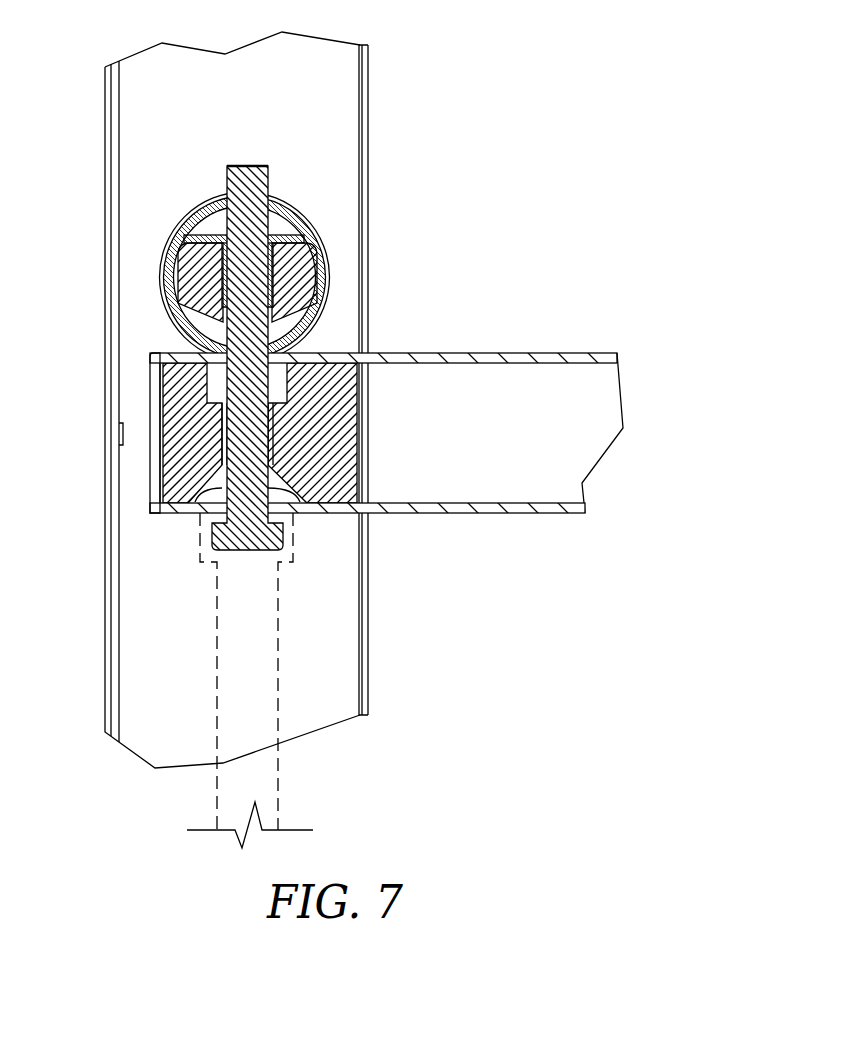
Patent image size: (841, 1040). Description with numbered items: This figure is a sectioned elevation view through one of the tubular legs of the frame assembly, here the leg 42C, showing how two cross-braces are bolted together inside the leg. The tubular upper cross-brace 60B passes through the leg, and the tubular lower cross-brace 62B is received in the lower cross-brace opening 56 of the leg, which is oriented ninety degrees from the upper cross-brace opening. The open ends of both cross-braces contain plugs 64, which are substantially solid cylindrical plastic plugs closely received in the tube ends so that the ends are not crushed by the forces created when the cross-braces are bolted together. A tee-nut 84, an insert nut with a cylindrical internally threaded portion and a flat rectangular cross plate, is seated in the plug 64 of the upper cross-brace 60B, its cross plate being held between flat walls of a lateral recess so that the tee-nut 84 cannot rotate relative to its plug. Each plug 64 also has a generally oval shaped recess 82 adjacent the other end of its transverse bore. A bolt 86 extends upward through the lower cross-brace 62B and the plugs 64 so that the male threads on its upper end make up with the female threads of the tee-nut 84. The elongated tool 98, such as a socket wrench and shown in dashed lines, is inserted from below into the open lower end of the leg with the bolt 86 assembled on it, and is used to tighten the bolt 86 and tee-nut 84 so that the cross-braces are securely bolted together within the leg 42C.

The leg 42C is at (370, 90).
The tee-nut 84 is at (286, 238).
The plug 64 is at (202, 278).
The upper cross-brace 60B is at (322, 288).
The lower cross-brace opening 56 is at (365, 355).
The lower cross-brace 62B is at (462, 515).
The oval shaped recess 82 is at (215, 505).
The bolt 86 is at (248, 524).
The elongated tool 98 is at (278, 783).